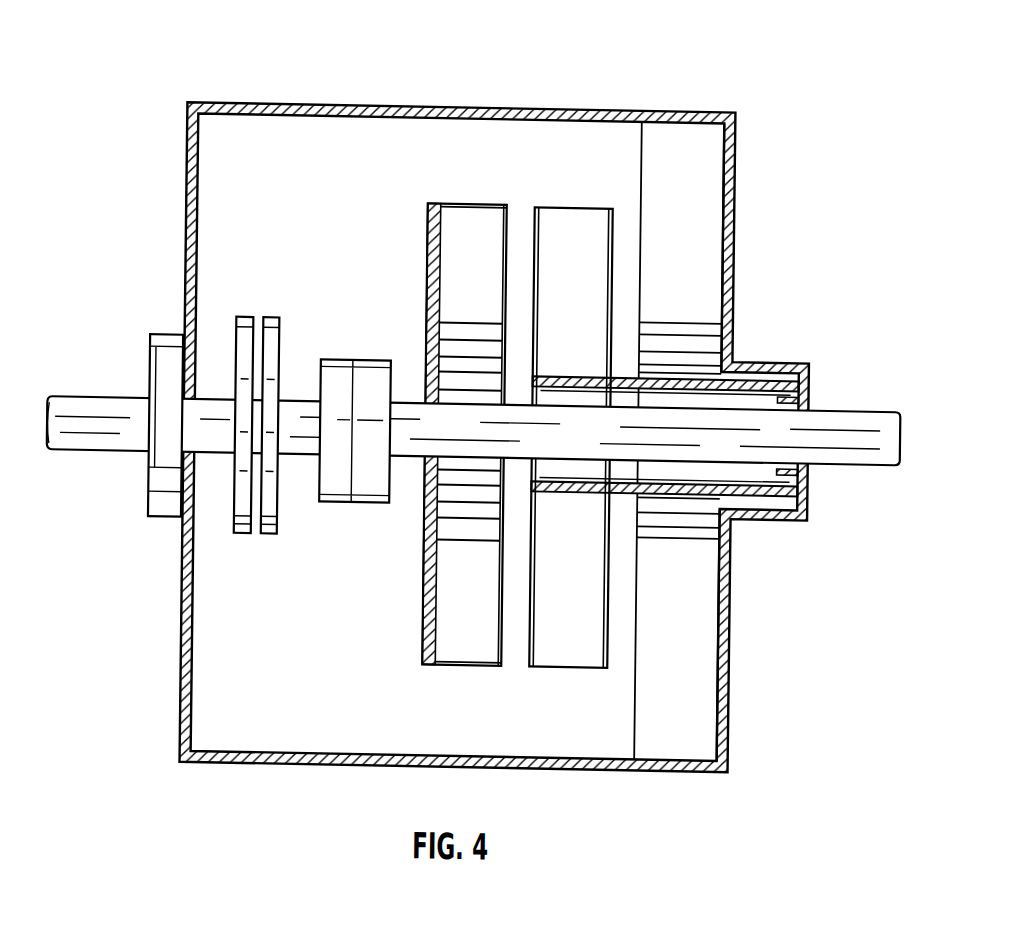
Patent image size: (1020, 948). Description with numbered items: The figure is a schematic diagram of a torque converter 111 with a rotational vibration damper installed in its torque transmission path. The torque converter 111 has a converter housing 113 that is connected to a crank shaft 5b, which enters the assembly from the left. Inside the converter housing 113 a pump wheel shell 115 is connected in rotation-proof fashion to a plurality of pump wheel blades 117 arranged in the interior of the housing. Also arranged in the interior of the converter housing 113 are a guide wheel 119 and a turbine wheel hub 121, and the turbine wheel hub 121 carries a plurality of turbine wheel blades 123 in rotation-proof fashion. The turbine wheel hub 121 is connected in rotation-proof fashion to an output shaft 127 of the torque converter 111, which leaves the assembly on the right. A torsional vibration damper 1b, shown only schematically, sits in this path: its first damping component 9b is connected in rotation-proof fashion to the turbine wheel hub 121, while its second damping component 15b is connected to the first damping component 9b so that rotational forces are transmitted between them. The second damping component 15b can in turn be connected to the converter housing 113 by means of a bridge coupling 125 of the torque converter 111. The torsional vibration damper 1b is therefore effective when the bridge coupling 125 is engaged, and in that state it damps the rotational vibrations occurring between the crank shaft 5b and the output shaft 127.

The torque converter 111 is at (292, 86).
The converter housing 113 is at (183, 663).
The pump wheel shell 115 is at (731, 635).
The pump wheel blades 117 is at (664, 138).
The guide wheel 119 is at (575, 653).
The turbine wheel hub 121 is at (435, 376).
The turbine wheel blades 123 is at (470, 653).
The bridge coupling 125 is at (263, 548).
The output shaft 127 is at (845, 457).
The crank shaft 5b is at (109, 417).
The first damping component 9b is at (371, 376).
The second damping component 15b is at (340, 368).
The torsional vibration damper 1b is at (353, 512).